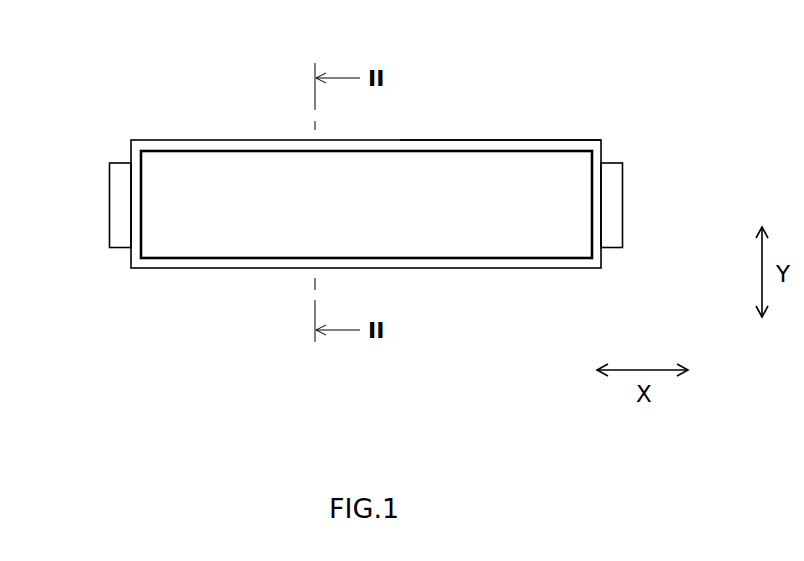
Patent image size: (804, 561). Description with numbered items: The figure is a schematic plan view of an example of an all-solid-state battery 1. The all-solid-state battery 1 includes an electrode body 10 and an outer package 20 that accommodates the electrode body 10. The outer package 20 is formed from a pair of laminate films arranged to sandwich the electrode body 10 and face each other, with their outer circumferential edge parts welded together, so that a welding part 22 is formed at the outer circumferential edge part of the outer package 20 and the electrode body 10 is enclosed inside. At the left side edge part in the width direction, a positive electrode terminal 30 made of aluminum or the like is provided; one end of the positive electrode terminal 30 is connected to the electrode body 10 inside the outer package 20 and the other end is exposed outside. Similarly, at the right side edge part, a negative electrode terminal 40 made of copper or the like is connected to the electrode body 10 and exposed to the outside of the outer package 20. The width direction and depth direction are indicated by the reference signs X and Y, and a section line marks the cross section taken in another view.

The all-solid-state battery 1 is at (64, 47).
The electrode body 10 is at (435, 237).
The outer package 20 is at (585, 268).
The welding part 22 is at (494, 140).
The positive electrode terminal 30 is at (118, 183).
The negative electrode terminal 40 is at (617, 179).